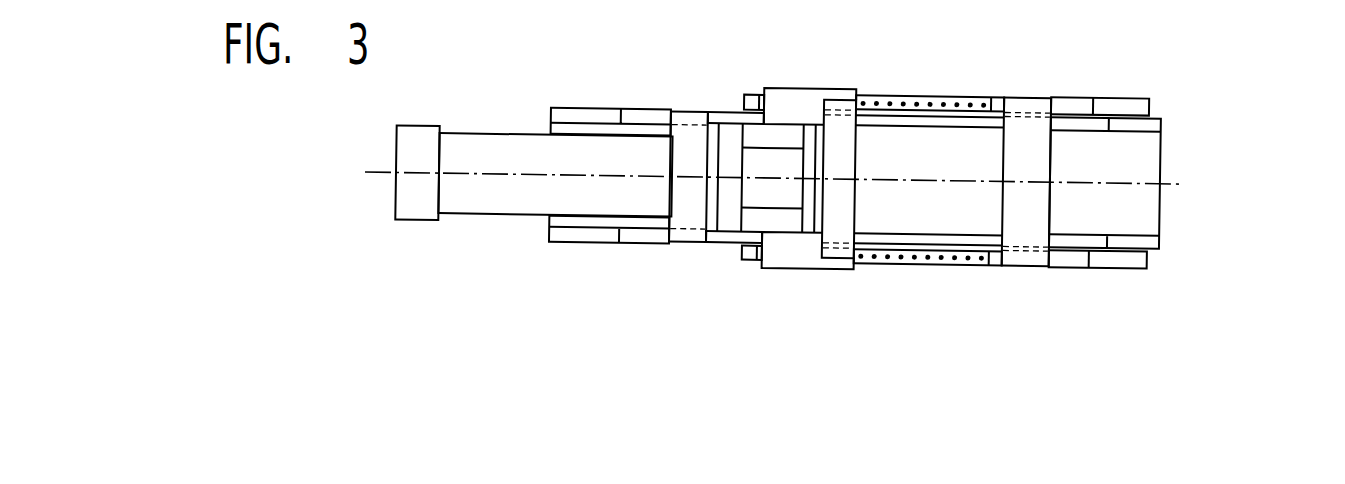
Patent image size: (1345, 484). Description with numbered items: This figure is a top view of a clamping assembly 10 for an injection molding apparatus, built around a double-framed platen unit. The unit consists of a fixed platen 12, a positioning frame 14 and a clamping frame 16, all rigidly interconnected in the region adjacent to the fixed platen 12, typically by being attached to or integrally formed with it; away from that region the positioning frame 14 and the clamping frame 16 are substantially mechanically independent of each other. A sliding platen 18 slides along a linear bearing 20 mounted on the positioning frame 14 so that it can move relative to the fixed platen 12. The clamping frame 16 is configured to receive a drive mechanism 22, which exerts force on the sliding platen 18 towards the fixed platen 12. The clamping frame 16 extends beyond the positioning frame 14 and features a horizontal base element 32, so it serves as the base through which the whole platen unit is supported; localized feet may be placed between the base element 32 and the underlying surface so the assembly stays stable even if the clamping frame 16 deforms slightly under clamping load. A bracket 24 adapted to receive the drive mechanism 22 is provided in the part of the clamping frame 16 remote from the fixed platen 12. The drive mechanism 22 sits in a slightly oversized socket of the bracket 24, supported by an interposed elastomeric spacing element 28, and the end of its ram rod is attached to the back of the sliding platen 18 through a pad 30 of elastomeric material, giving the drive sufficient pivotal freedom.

The clamping assembly 10 is at (1233, 158).
The fixed platen 12 is at (1030, 222).
The positioning frame 14 is at (1148, 260).
The clamping frame 16 is at (1137, 242).
The sliding platen 18 is at (840, 218).
The linear bearing 20 is at (947, 267).
The drive mechanism 22 is at (515, 202).
The bracket 24 is at (695, 235).
The elastomeric spacing element 28 is at (713, 153).
The pad 30 is at (823, 182).
The horizontal base element 32 is at (1143, 153).